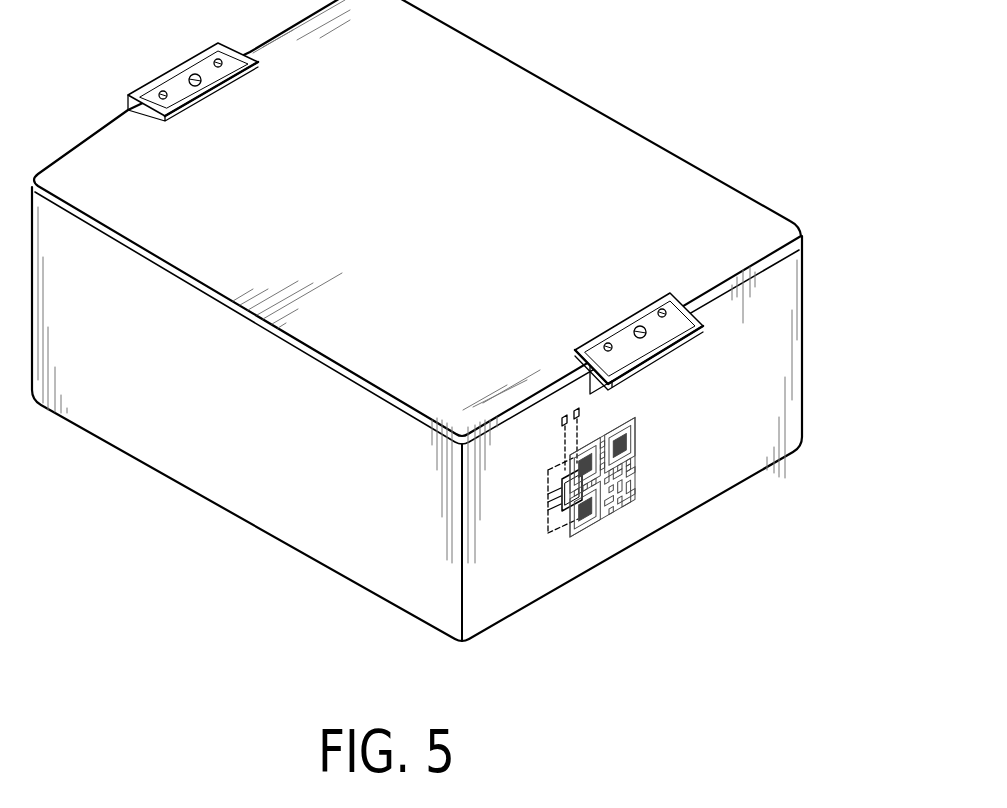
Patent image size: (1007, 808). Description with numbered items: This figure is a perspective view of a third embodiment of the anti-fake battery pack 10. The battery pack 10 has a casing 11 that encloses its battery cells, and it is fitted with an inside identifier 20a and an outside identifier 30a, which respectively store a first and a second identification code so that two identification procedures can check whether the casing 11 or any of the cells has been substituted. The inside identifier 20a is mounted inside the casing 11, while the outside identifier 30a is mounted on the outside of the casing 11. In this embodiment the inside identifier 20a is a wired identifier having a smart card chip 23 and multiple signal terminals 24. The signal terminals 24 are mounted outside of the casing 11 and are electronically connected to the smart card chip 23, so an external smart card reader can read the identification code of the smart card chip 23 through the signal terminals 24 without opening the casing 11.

The battery pack 10 is at (463, 320).
The casing 11 is at (802, 273).
The inside identifier 20a is at (571, 543).
The smart card chip 23 is at (549, 487).
The signal terminals 24 is at (562, 412).
The outside identifier 30a is at (637, 443).